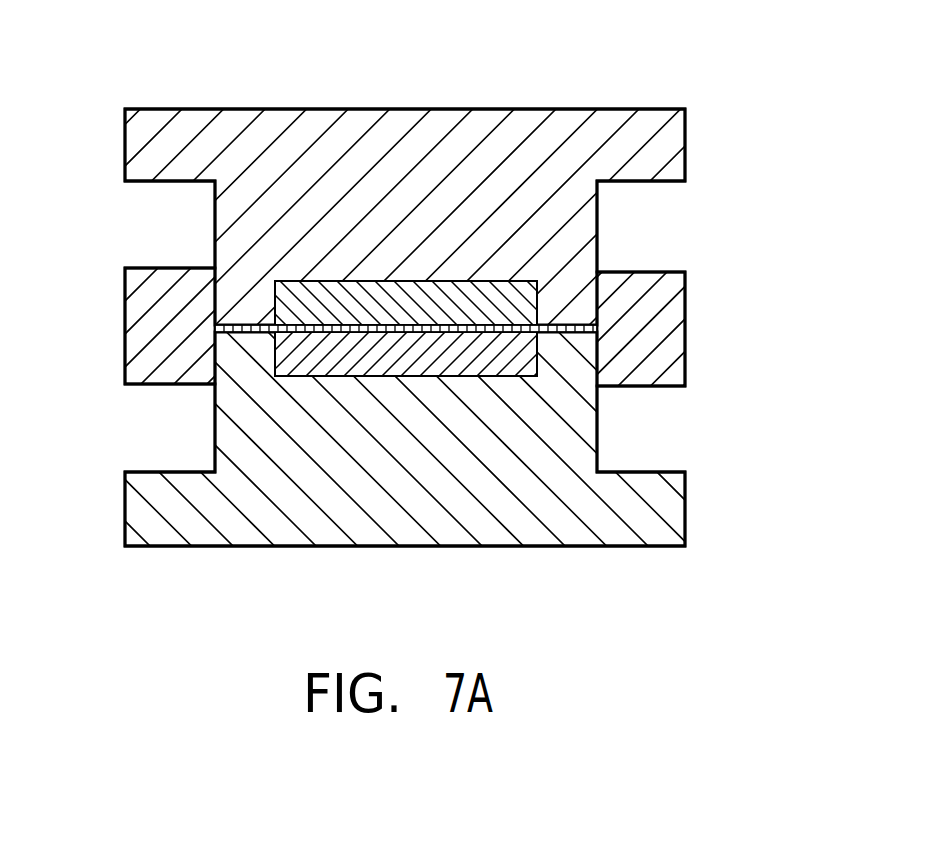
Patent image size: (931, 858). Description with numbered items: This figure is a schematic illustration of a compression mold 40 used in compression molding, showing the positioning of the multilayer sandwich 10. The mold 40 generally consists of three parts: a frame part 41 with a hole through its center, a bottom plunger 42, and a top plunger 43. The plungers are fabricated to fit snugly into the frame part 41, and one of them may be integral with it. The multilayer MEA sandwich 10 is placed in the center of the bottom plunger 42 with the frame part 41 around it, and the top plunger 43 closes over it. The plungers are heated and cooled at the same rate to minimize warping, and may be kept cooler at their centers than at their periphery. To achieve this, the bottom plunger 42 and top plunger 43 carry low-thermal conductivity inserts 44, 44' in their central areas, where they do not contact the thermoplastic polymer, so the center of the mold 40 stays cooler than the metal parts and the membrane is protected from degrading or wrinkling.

The compression mold 40 is at (503, 577).
The frame part 41 is at (125, 269).
The bottom plunger 42 is at (332, 530).
The top plunger 43 is at (358, 120).
The low-thermal conductivity insert 44 is at (465, 350).
The low-thermal conductivity insert 44' is at (464, 350).
The multilayer MEA sandwich 10 is at (556, 333).